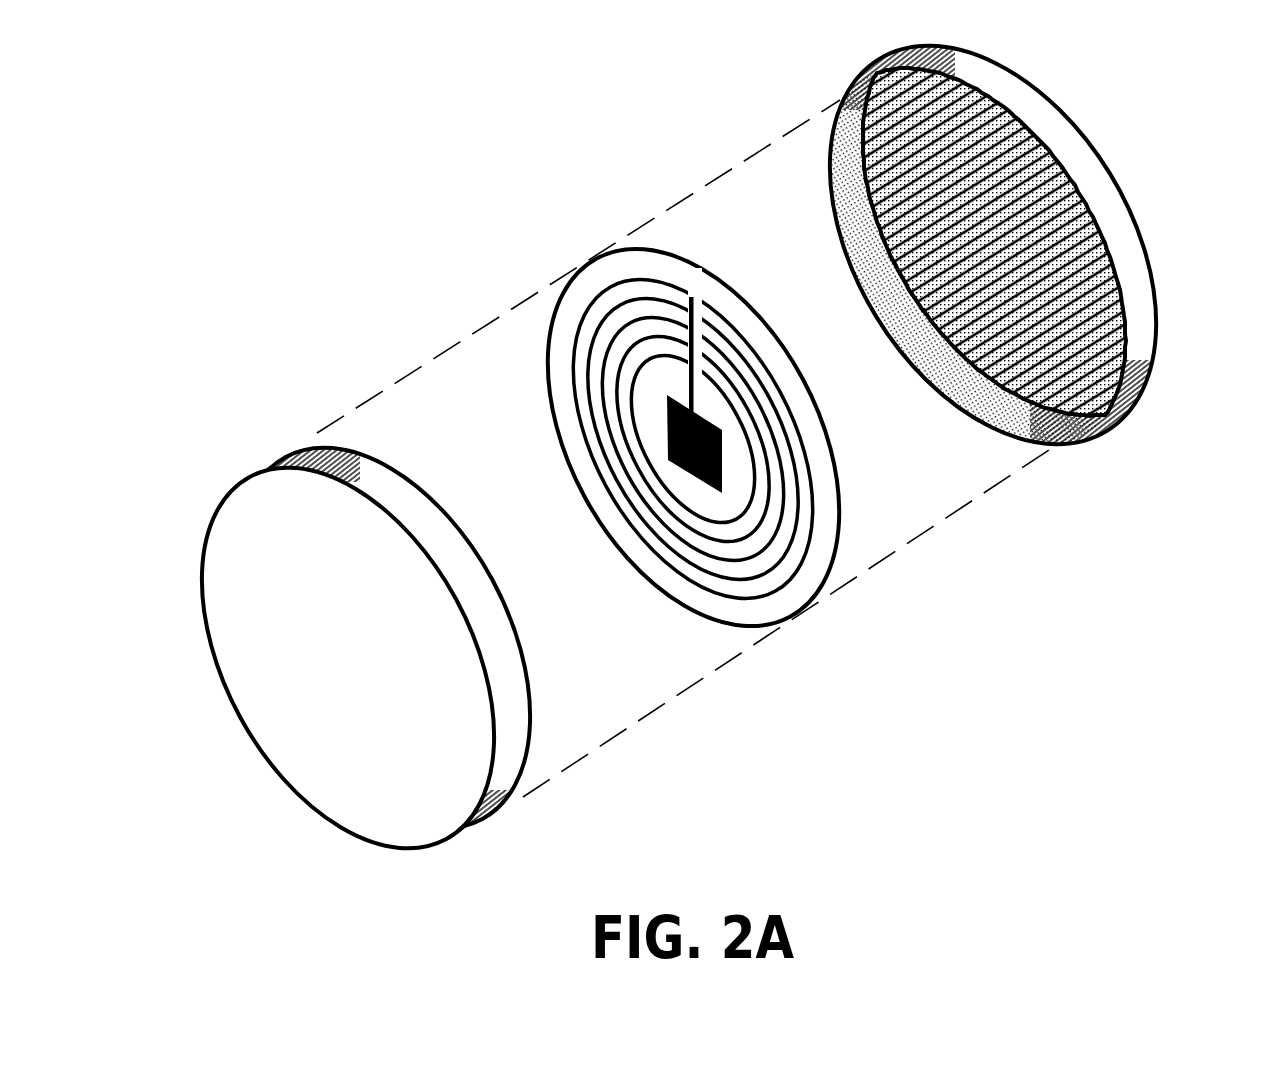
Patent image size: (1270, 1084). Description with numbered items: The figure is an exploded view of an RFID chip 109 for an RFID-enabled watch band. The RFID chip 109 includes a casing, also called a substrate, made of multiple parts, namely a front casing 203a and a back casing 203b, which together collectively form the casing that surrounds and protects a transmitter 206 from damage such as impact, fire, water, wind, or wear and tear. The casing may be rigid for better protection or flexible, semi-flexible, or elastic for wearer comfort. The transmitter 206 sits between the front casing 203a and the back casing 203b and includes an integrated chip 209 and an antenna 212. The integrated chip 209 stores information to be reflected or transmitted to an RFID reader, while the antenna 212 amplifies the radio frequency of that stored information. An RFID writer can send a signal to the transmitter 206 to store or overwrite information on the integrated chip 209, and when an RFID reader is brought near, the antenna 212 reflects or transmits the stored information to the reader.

The RFID chip 109 is at (372, 255).
The front casing 203a is at (285, 656).
The back casing 203b is at (1040, 123).
The transmitter 206 is at (840, 527).
The integrated chip 209 is at (658, 430).
The antenna 212 is at (727, 327).